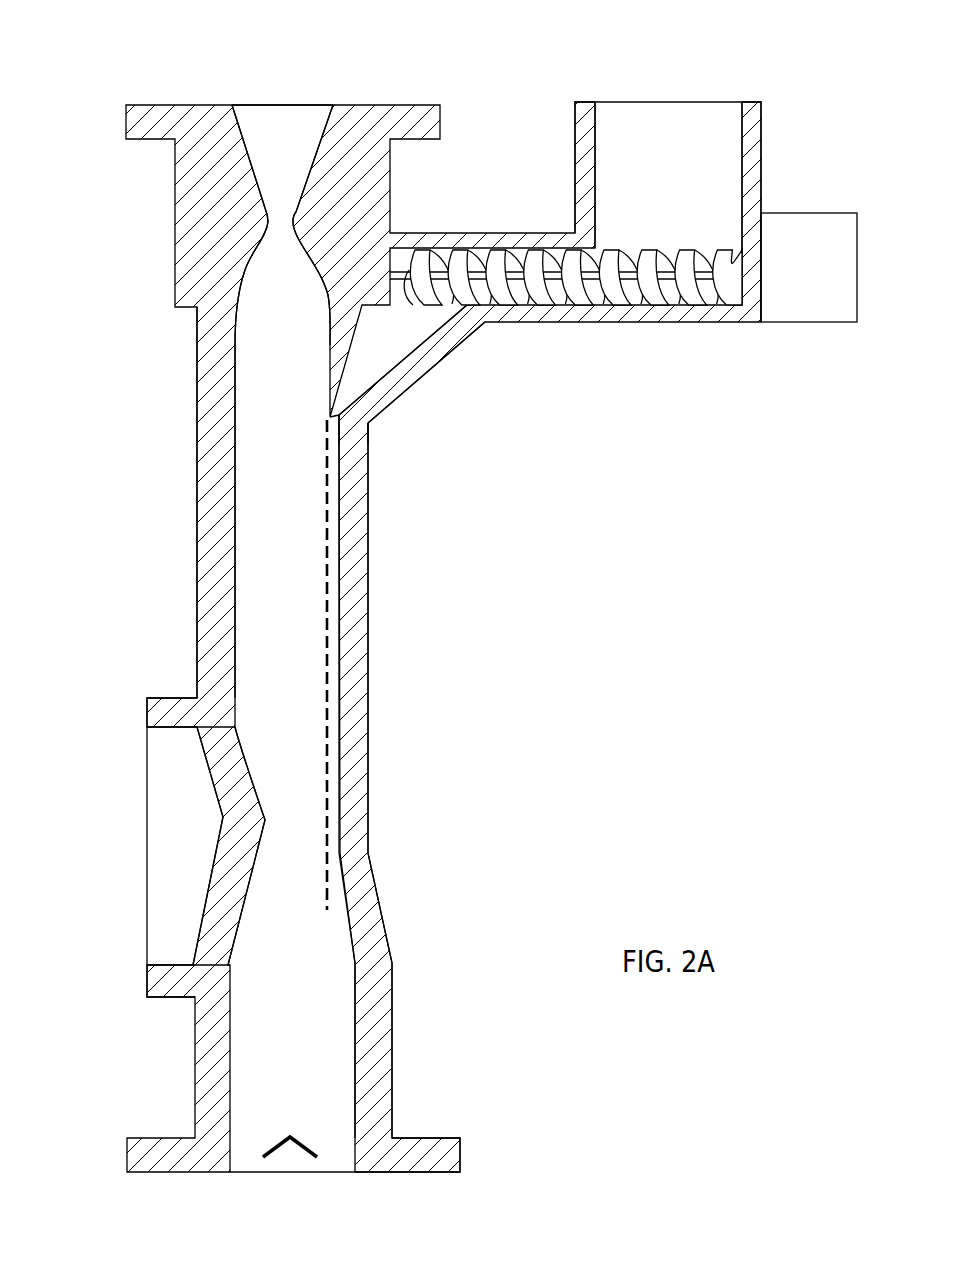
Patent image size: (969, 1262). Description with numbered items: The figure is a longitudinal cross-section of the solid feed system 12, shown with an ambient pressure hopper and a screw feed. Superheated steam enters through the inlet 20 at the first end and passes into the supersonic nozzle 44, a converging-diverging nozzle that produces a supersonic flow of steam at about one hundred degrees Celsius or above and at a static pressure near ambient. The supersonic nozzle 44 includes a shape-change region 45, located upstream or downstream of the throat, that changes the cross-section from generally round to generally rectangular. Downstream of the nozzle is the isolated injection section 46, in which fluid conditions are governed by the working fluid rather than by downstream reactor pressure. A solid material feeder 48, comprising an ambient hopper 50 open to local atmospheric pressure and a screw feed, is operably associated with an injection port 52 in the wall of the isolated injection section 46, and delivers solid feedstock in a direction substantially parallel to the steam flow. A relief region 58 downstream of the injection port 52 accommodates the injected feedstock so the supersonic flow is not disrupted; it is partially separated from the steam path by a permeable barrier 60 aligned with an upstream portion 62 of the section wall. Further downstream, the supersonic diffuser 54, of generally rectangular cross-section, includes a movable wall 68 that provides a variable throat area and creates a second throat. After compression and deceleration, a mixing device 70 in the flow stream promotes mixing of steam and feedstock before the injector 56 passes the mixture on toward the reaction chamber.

The solid feed system 12 is at (80, 82).
The inlet 20 is at (263, 92).
The supersonic nozzle 44 is at (240, 228).
The shape-change region 45 is at (233, 269).
The isolated injection section 46 is at (174, 490).
The solid material feeder 48 is at (648, 373).
The ambient hopper 50 is at (653, 112).
The injection port 52 is at (338, 412).
The supersonic diffuser 54 is at (130, 822).
The injector 56 is at (420, 1113).
The relief region 58 is at (340, 529).
The permeable barrier 60 is at (326, 617).
The upstream portion of the wall 62 is at (345, 372).
The movable wall 68 is at (230, 886).
The mixing device 70 is at (274, 1140).